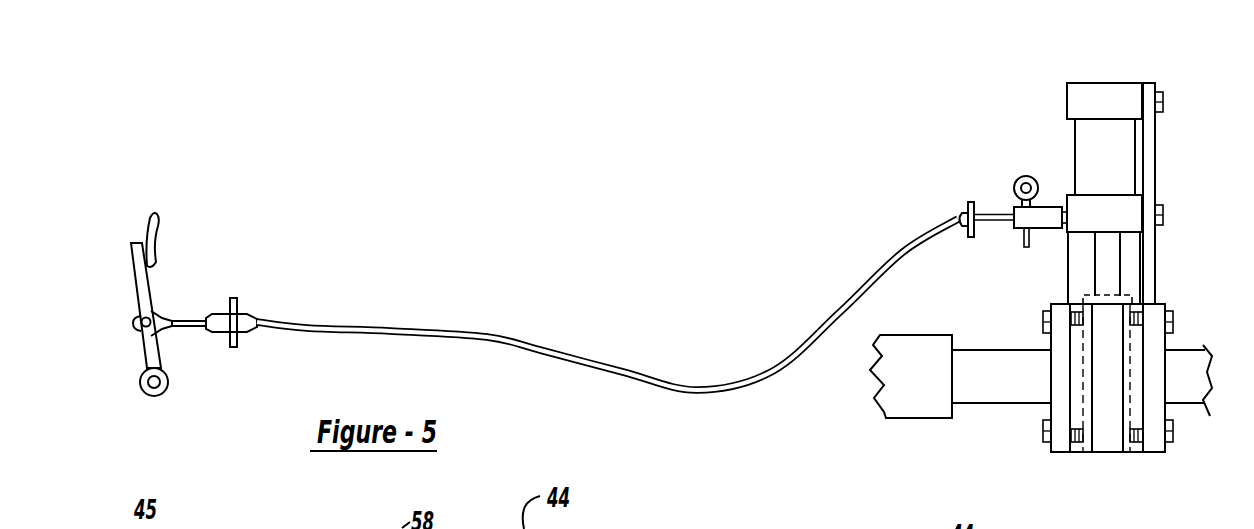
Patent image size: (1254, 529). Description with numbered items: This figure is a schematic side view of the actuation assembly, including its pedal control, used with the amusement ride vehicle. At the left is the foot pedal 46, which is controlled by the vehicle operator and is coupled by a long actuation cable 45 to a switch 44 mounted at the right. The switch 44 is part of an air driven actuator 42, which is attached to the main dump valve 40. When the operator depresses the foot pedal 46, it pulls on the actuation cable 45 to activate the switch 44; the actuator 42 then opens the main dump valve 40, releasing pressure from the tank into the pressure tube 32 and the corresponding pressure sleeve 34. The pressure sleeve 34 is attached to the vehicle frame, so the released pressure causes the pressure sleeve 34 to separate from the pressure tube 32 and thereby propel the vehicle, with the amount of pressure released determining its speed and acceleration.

The pressure tube 32 is at (1004, 377).
The pressure sleeve 34 is at (912, 402).
The main dump valve 40 is at (1064, 438).
The actuator 42 is at (1125, 97).
The switch 44 is at (1020, 216).
The actuation cable 45 is at (488, 336).
The foot pedal 46 is at (152, 288).